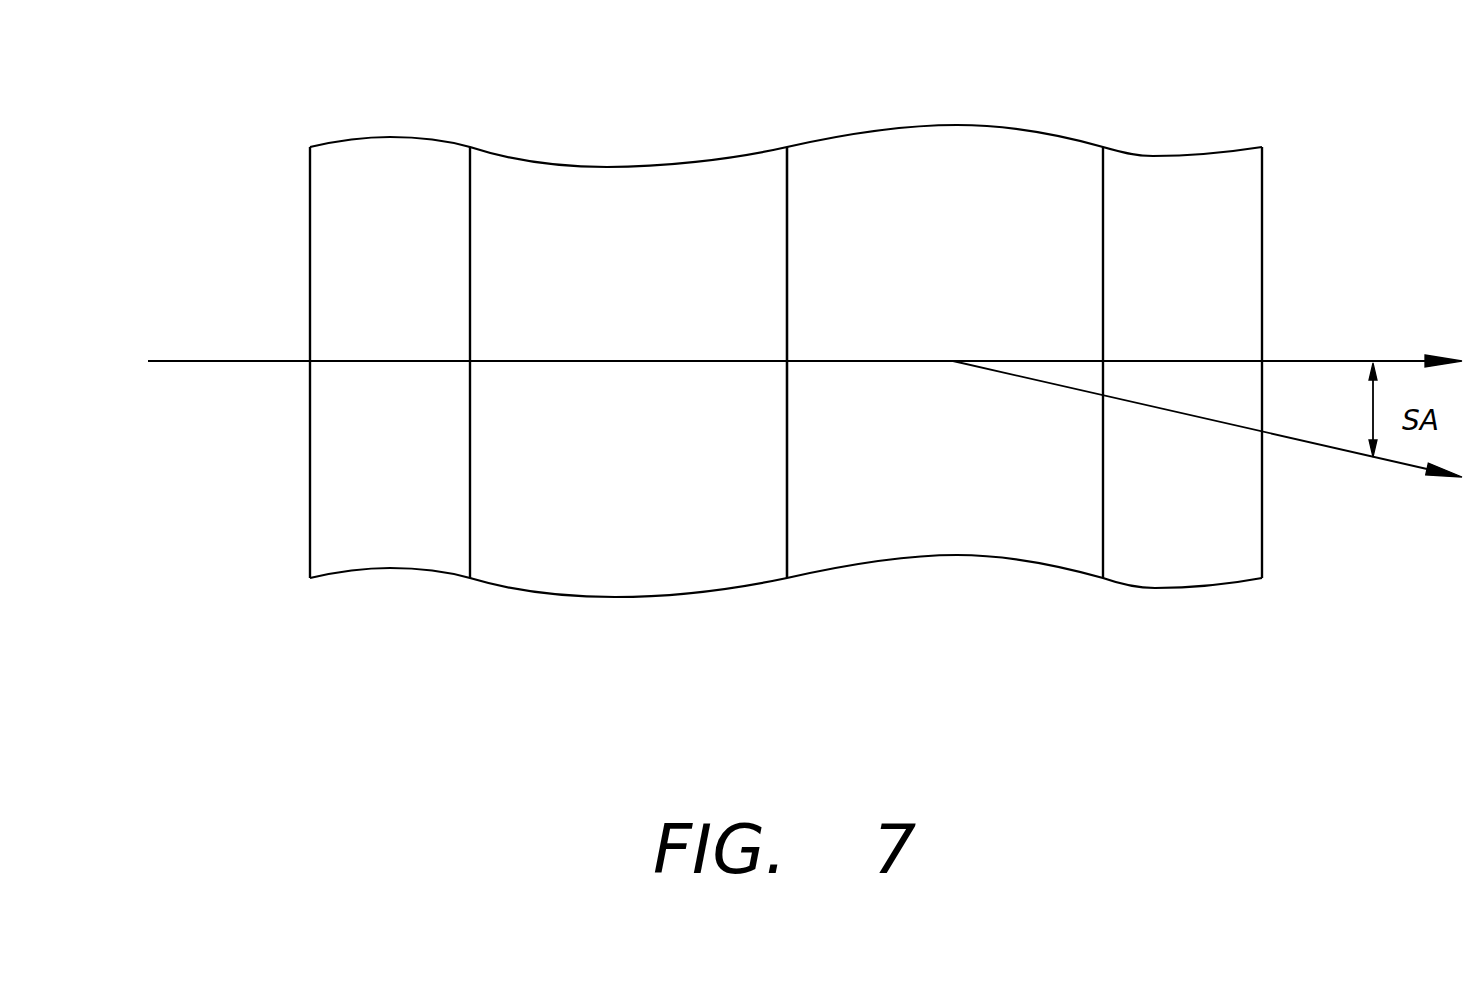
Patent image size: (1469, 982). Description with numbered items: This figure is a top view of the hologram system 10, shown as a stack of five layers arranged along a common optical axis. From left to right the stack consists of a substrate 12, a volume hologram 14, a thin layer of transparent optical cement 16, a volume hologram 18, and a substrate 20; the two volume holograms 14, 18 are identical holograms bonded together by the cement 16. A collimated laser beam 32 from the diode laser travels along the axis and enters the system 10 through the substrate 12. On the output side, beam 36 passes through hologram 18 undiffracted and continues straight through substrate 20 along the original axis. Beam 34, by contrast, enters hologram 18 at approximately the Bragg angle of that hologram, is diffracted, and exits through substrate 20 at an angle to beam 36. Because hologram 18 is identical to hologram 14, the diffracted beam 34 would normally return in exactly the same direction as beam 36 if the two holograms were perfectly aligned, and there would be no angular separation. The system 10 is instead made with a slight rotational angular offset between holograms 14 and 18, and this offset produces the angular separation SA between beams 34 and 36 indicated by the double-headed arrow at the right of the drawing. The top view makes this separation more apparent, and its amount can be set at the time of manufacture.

The hologram system 10 is at (374, 716).
The substrate 12 is at (393, 136).
The volume hologram 14 is at (617, 165).
The transparent optical cement 16 is at (785, 147).
The volume hologram 18 is at (950, 126).
The substrate 20 is at (1180, 155).
The laser beam 32 is at (200, 360).
The beam 34 is at (1390, 467).
The beam 36 is at (1394, 360).